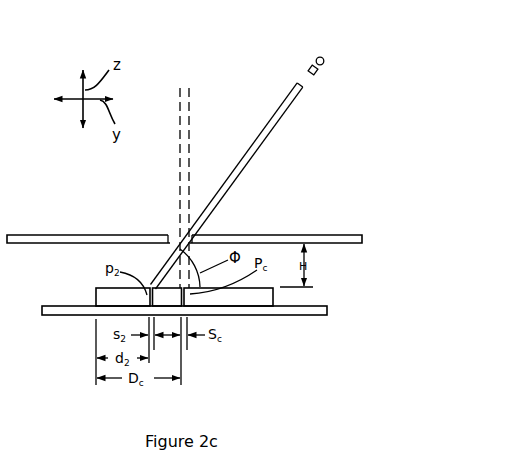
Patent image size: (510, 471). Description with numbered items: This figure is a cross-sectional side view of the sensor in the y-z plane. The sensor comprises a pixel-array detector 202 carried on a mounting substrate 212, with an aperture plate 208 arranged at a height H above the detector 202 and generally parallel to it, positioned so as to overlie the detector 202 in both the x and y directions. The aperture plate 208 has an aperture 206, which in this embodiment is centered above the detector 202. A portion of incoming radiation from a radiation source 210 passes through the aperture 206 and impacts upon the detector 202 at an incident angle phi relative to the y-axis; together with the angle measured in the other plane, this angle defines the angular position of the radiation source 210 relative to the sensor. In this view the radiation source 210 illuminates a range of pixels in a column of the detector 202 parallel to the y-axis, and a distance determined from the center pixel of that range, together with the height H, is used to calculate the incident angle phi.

The pixel-array detector 202 is at (252, 297).
The aperture 206 is at (177, 232).
The aperture plate 208 is at (62, 242).
The radiation source 210 is at (324, 60).
The mounting substrate 212 is at (290, 312).